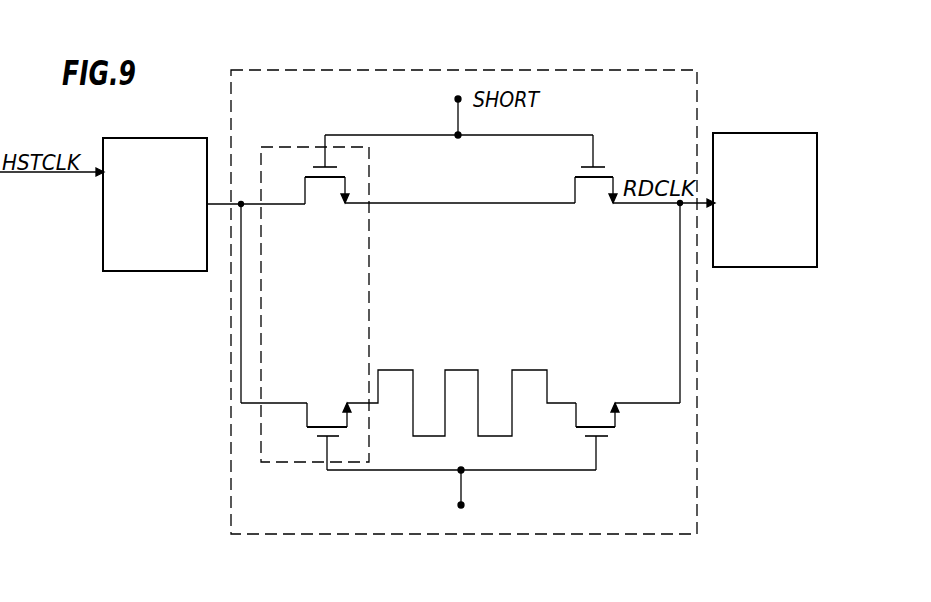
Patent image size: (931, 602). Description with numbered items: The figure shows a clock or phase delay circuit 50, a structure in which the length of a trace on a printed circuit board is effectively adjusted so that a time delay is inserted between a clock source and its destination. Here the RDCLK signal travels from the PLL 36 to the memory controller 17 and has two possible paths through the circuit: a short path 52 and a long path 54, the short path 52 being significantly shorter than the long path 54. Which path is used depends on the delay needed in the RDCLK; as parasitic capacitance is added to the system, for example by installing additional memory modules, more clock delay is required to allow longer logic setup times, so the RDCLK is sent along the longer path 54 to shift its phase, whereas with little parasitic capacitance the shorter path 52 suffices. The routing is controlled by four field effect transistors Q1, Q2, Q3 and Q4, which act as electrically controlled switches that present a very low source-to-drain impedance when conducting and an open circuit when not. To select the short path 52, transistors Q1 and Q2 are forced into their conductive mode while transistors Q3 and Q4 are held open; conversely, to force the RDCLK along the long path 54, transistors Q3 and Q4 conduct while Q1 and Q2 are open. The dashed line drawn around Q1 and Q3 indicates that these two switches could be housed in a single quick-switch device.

The clock or phase delay circuit 50 is at (283, 70).
The PLL 36 is at (170, 221).
The memory controller 17 is at (779, 215).
The short path 52 is at (444, 195).
The long path 54 is at (460, 410).
The field effect transistor Q1 is at (310, 169).
The field effect transistor Q2 is at (580, 169).
The field effect transistor Q3 is at (314, 436).
The field effect transistor Q4 is at (578, 436).